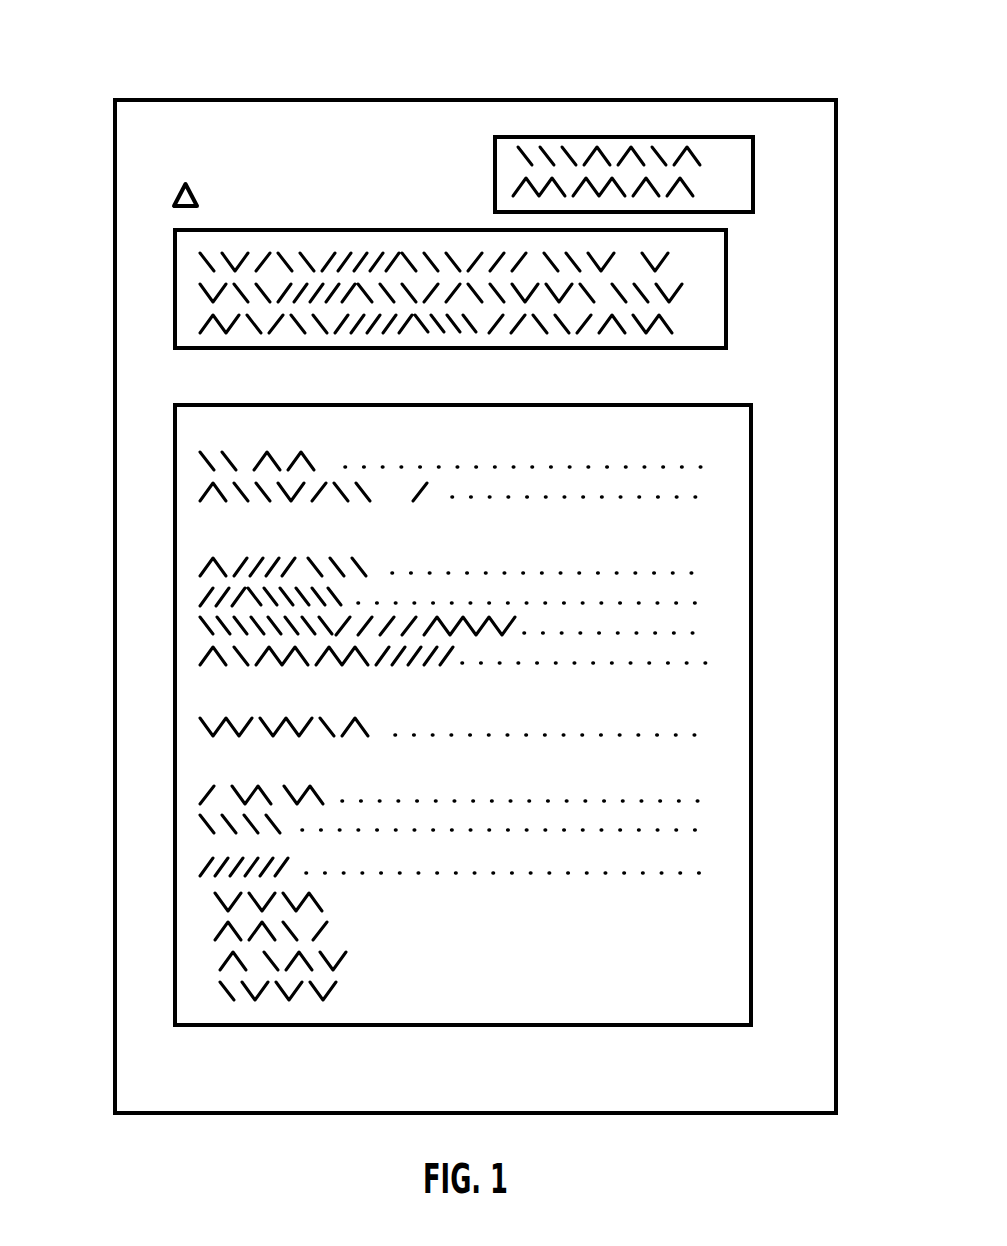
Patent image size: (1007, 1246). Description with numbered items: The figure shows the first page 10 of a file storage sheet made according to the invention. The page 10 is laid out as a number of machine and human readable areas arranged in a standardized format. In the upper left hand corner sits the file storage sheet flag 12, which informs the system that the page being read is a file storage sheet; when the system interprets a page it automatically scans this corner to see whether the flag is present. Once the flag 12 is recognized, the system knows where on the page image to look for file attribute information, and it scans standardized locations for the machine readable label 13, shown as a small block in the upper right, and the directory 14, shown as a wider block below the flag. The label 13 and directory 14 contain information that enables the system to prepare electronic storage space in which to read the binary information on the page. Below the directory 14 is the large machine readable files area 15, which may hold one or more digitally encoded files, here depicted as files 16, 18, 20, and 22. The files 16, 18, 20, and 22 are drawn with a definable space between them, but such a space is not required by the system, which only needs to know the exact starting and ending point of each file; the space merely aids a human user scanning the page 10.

The first page 10 is at (630, 68).
The file storage sheet flag 12 is at (131, 190).
The label 13 is at (732, 137).
The directory 14 is at (175, 297).
The files area 15 is at (175, 427).
The file 16 is at (200, 472).
The file 18 is at (195, 612).
The file 20 is at (190, 730).
The file 22 is at (206, 852).